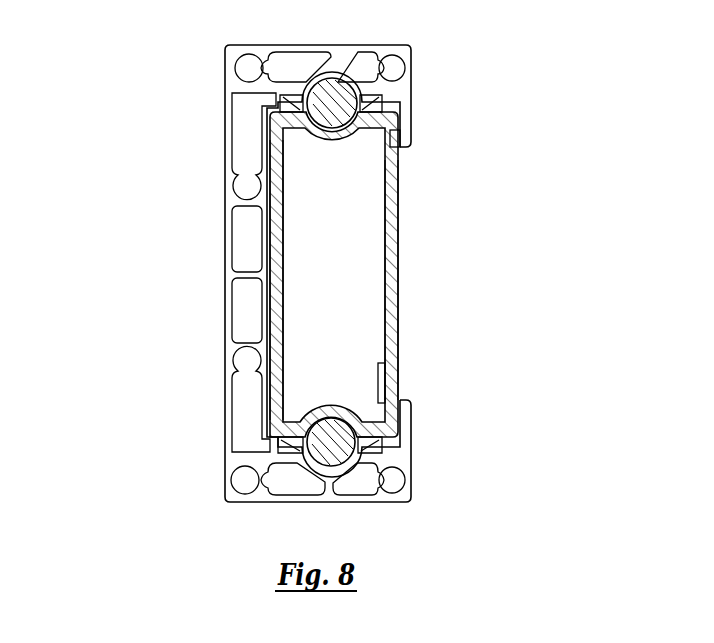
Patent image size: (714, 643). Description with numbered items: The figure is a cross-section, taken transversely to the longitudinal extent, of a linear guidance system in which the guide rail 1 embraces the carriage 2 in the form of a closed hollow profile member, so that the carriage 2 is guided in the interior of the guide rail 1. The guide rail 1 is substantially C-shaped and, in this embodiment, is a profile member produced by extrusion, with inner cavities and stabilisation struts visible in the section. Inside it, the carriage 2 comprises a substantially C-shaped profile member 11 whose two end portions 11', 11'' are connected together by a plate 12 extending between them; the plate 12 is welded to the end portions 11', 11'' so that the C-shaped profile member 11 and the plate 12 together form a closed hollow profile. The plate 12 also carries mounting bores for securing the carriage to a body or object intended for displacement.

The guide rail 1 is at (233, 196).
The carriage 2 is at (400, 197).
The C-shaped profile member 11 is at (161, 280).
The end portion 11' is at (463, 98).
The end portion 11'' is at (470, 420).
The plate 12 is at (393, 253).